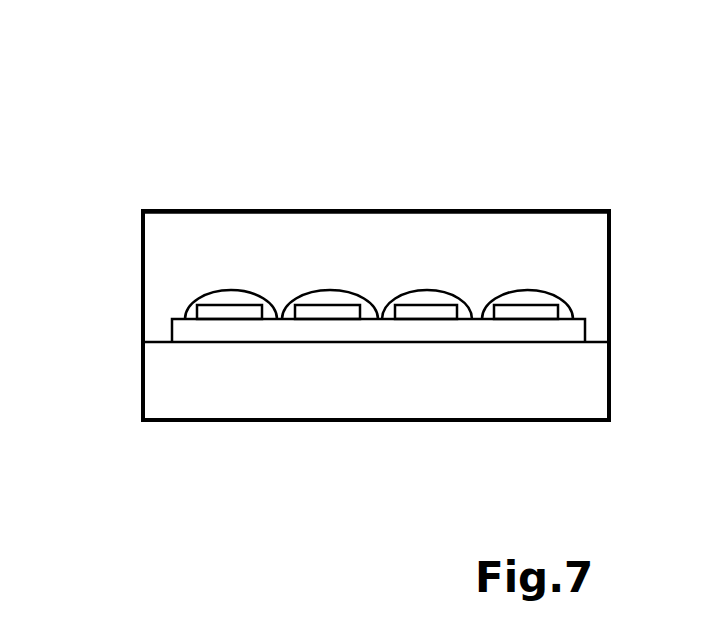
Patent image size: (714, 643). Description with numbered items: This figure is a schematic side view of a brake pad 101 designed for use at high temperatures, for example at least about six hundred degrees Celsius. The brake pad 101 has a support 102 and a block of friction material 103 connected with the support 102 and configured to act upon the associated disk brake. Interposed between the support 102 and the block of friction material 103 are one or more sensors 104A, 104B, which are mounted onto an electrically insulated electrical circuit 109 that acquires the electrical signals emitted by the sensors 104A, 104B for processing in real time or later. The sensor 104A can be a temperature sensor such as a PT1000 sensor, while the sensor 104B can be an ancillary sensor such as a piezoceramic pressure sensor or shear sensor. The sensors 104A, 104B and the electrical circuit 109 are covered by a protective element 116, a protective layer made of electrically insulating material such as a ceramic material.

The brake pad 101 is at (102, 290).
The support 102 is at (212, 383).
The block of friction material 103 is at (260, 263).
The electrical circuit 109 is at (393, 330).
The temperature sensor 104A is at (213, 305).
The ancillary sensor 104B is at (350, 303).
The protective element 116 is at (235, 290).